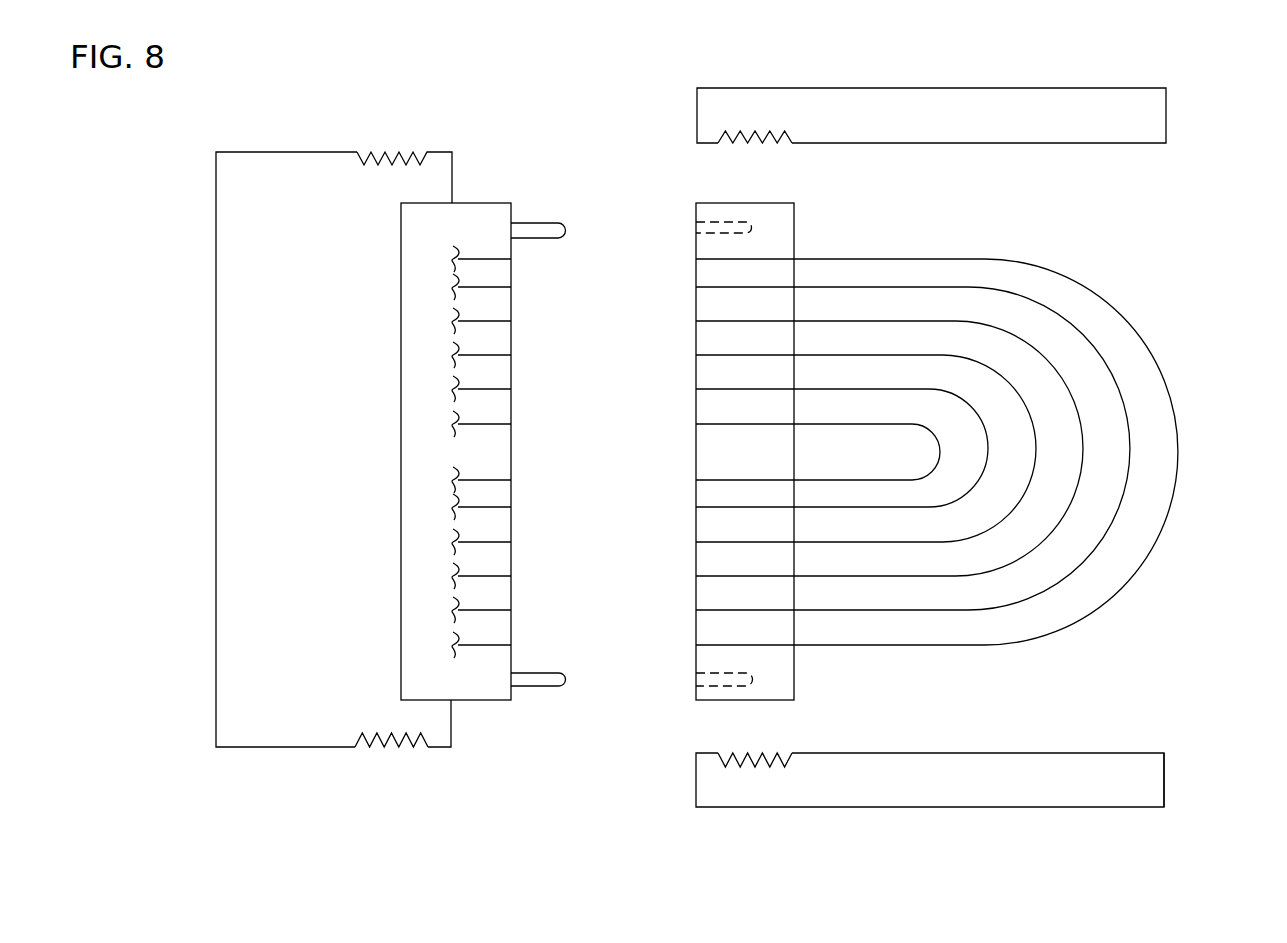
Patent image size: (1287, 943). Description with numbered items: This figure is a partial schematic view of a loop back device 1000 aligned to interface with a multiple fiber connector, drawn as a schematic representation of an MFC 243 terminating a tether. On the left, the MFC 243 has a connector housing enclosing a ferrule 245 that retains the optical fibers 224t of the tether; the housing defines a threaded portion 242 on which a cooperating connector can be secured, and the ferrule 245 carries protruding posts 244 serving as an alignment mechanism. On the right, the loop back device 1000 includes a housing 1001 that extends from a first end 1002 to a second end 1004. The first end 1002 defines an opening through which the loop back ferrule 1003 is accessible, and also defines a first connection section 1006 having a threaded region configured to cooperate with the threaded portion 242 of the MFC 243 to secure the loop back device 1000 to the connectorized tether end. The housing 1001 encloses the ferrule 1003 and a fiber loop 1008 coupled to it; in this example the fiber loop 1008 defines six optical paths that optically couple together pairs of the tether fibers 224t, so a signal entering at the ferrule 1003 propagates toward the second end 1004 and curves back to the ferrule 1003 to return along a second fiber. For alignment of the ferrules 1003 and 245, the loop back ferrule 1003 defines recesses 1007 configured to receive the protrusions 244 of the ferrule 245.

The threaded portion 242 is at (384, 153).
The MFC 243 is at (306, 758).
The protruding posts 244 is at (542, 219).
The ferrule 245 is at (485, 188).
The optical fibers 224t is at (502, 543).
The loop back device 1000 is at (931, 105).
The housing 1001 is at (1114, 88).
The first end 1002 is at (678, 812).
The ferrule 1003 is at (812, 680).
The second end 1004 is at (1179, 817).
The first connection section 1006 is at (778, 152).
The recesses 1007 is at (690, 688).
The fiber loop 1008 is at (1109, 282).